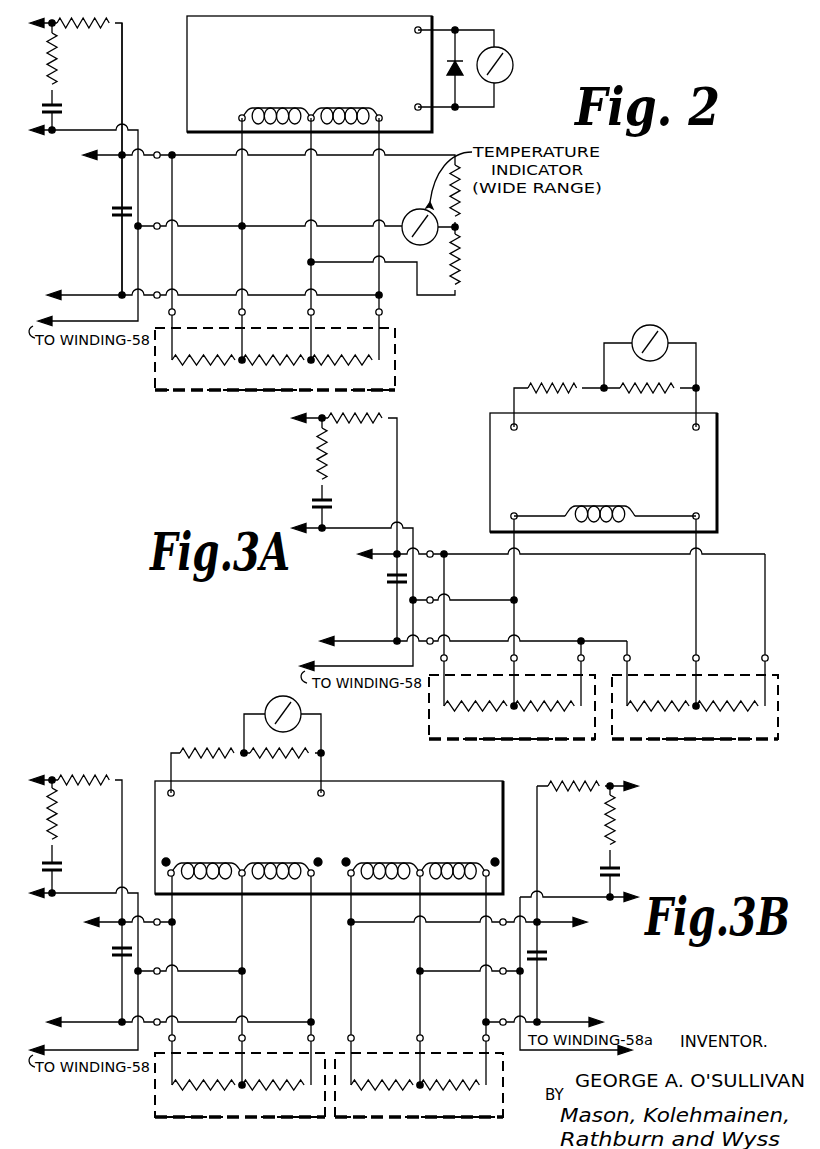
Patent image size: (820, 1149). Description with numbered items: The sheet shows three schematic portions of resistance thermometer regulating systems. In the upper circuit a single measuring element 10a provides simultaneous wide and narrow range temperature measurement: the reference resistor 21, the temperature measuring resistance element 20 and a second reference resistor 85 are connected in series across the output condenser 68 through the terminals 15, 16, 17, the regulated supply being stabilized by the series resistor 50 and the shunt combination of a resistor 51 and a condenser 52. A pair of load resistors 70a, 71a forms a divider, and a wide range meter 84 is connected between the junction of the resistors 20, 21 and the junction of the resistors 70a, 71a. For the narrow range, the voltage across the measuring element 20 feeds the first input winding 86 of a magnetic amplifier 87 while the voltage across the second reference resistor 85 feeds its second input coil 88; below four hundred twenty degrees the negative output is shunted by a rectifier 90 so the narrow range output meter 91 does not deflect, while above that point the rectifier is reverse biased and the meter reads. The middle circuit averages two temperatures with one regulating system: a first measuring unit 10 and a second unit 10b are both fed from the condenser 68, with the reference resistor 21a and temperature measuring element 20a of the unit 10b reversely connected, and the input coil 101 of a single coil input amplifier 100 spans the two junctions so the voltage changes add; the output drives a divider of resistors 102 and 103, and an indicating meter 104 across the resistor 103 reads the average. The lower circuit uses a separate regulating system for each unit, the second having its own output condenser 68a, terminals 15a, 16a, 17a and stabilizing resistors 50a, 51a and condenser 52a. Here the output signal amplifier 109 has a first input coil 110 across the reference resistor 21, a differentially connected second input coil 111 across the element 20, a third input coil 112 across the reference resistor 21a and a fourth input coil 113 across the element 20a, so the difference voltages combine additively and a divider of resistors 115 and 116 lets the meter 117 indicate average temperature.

In FIG. 3A, the measuring unit 10 is at (490, 697).
In FIG. 3B, the measuring unit 10 is at (215, 1076).
In FIG. 2, the measuring element 10a is at (245, 354).
In FIG. 3A, the second measuring unit 10b is at (695, 714).
In FIG. 3B, the second measuring unit 10b is at (419, 1091).
In FIG. 2, the terminal 15 is at (163, 153).
In FIG. 3A, the terminal 15 is at (435, 550).
In FIG. 3B, the terminal 15 is at (160, 908).
In FIG. 2, the conductor 16 is at (163, 224).
In FIG. 3A, the conductor 16 is at (435, 586).
In FIG. 3B, the conductor 16 is at (160, 957).
In FIG. 2, the terminal 17 is at (163, 293).
In FIG. 3A, the terminal 17 is at (435, 627).
In FIG. 3B, the terminal 17 is at (160, 1008).
In FIG. 3B, the conductor 15a is at (507, 910).
In FIG. 3B, the conductor 16a is at (507, 958).
In FIG. 3B, the conductor 17a is at (507, 1009).
In FIG. 2, the temperature measuring resistance element 20 is at (285, 362).
In FIG. 3A, the temperature measuring resistance element 20 is at (553, 708).
In FIG. 3B, the temperature measuring resistance element 20 is at (287, 1087).
In FIG. 2, the reference resistor 21 is at (208, 362).
In FIG. 3A, the reference resistor 21 is at (493, 708).
In FIG. 3B, the reference resistor 21 is at (215, 1087).
In FIG. 3A, the temperature measuring element 20a is at (737, 708).
In FIG. 3B, the temperature measuring element 20a is at (467, 1087).
In FIG. 3A, the reference resistor 21a is at (677, 708).
In FIG. 3B, the reference resistor 21a is at (400, 1087).
In FIG. 2, the series resistor 50 is at (85, 32).
In FIG. 3A, the series resistor 50 is at (359, 426).
In FIG. 3B, the series resistor 50 is at (85, 789).
In FIG. 2, the resistor 51 is at (56, 68).
In FIG. 3A, the resistor 51 is at (326, 462).
In FIG. 3B, the resistor 51 is at (56, 826).
In FIG. 2, the condenser 52 is at (62, 108).
In FIG. 3A, the condenser 52 is at (332, 503).
In FIG. 3B, the condenser 52 is at (62, 866).
In FIG. 3B, the series resistor 50a is at (582, 789).
In FIG. 3B, the resistor 51a is at (604, 826).
In FIG. 3B, the condenser 52a is at (600, 870).
In FIG. 2, the output condenser 68 is at (115, 208).
In FIG. 3A, the output condenser 68 is at (387, 577).
In FIG. 3B, the output condenser 68 is at (116, 956).
In FIG. 3B, the output condenser 68a is at (547, 952).
In FIG. 2, the load resistor 70a is at (460, 211).
In FIG. 2, the load resistor 71a is at (460, 270).
In FIG. 2, the meter 84 is at (415, 209).
In FIG. 2, the second reference resistor 85 is at (358, 362).
In FIG. 2, the first input winding 86 is at (292, 126).
In FIG. 2, the magnetic amplifier 87 is at (187, 42).
In FIG. 2, the second input coil 88 is at (355, 126).
In FIG. 2, the rectifier 90 is at (461, 71).
In FIG. 2, the narrow range output meter 91 is at (513, 60).
In FIG. 3A, the single coil input amplifier 100 is at (717, 474).
In FIG. 3A, the input coil 101 is at (603, 524).
In FIG. 3A, the resistor 102 is at (556, 372).
In FIG. 3A, the resistor 103 is at (634, 372).
In FIG. 3A, the indicating meter 104 is at (664, 331).
In FIG. 3B, the output signal amplifier 109 is at (363, 781).
In FIG. 3B, the first input coil 110 is at (236, 884).
In FIG. 3B, the second input coil 111 is at (304, 884).
In FIG. 3B, the third input coil 112 is at (412, 884).
In FIG. 3B, the fourth input coil 113 is at (479, 884).
In FIG. 3B, the resistor 115 is at (204, 750).
In FIG. 3B, the resistor 116 is at (274, 757).
In FIG. 3B, the meter 117 is at (273, 700).